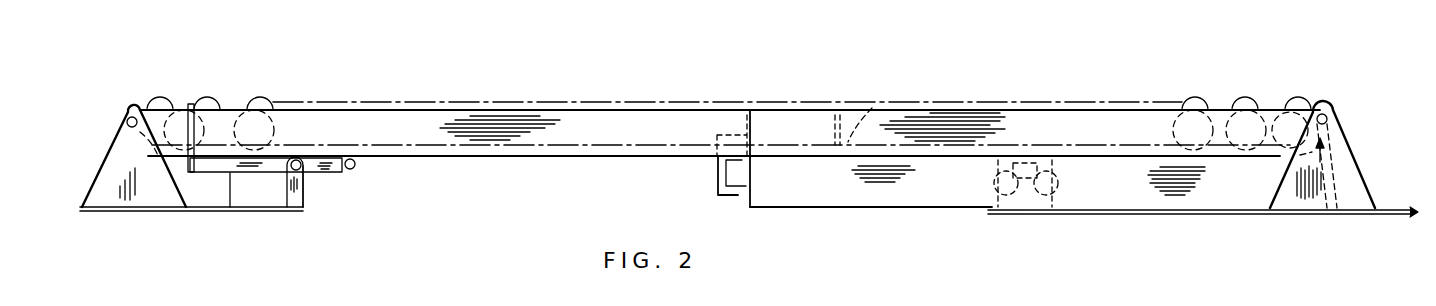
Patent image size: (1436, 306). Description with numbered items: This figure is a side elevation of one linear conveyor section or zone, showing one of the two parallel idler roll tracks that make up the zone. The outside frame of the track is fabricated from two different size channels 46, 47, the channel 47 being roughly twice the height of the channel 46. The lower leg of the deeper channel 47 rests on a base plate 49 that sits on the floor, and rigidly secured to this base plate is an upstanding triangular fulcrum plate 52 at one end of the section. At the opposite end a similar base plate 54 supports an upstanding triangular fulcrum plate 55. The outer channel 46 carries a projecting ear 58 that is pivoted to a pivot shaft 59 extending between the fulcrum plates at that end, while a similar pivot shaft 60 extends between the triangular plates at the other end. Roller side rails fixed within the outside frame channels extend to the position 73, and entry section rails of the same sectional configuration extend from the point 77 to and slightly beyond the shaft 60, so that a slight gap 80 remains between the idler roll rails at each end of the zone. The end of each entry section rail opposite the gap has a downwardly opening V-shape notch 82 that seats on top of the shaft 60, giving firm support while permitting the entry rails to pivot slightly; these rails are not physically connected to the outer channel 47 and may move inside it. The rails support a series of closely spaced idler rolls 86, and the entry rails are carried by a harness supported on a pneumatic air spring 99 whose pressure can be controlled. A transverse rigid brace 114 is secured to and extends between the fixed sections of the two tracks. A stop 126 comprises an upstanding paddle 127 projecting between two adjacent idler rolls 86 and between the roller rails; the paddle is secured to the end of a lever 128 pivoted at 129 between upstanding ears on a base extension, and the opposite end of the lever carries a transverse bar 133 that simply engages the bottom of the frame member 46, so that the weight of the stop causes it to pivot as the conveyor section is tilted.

The channel 46 is at (476, 157).
The channel 47 is at (870, 195).
The base plate 49 is at (1140, 214).
The triangular fulcrum plate 52 is at (1350, 185).
The base plate 54 is at (123, 211).
The triangular fulcrum plate 55 is at (114, 150).
The projecting ear 58 is at (107, 121).
The pivot shaft 59 is at (133, 117).
The pivot shaft 60 is at (1332, 111).
The rail end position 73 is at (834, 128).
The entry rail starting point 77 is at (872, 108).
The gap 80 is at (843, 95).
The V-shape notch 82 is at (1327, 210).
The idler roll 86 is at (262, 104).
The pneumatic air spring 99 is at (1058, 193).
The transverse rigid brace 114 is at (717, 176).
The stop 126 is at (204, 95).
The paddle 127 is at (190, 109).
The lever 128 is at (226, 173).
The pivot 129 is at (298, 170).
The transverse bar 133 is at (353, 168).